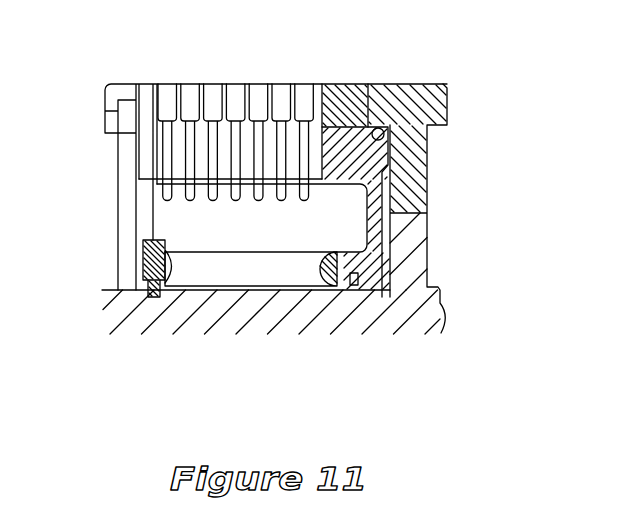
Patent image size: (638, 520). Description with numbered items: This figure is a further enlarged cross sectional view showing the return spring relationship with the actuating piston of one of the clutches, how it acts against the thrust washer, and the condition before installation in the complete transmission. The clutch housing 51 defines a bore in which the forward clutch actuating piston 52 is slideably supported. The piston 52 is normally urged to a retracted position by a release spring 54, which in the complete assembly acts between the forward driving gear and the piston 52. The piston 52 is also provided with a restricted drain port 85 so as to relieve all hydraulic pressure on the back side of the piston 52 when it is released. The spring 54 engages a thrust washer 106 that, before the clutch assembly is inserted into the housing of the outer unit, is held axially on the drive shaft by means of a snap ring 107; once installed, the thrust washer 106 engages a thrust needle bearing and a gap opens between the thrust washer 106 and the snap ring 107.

The clutch housing 51 is at (408, 108).
The forward clutch actuating piston 52 is at (357, 137).
The release spring 54 is at (297, 250).
The restricted drain port 85 is at (370, 191).
The thrust washer 106 is at (147, 263).
The snap ring 107 is at (150, 295).